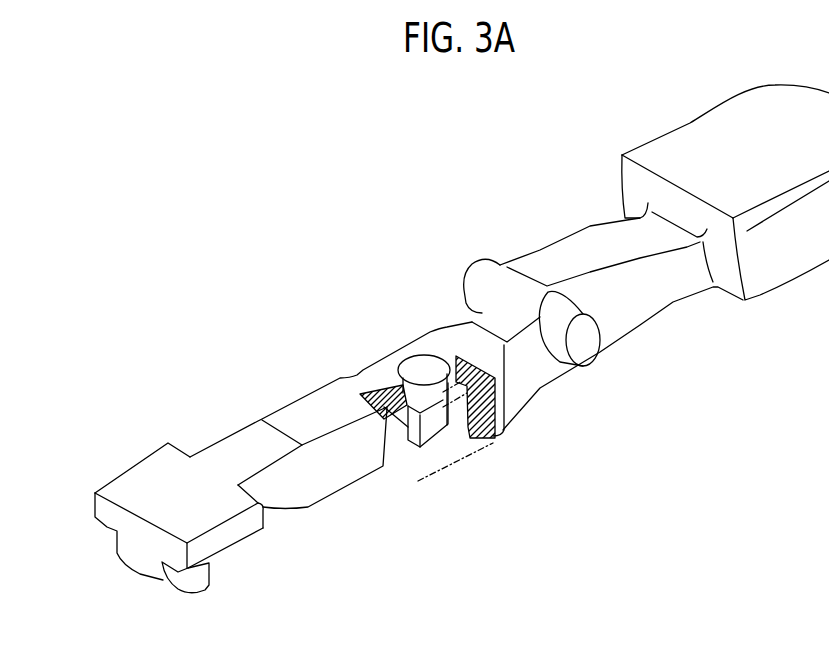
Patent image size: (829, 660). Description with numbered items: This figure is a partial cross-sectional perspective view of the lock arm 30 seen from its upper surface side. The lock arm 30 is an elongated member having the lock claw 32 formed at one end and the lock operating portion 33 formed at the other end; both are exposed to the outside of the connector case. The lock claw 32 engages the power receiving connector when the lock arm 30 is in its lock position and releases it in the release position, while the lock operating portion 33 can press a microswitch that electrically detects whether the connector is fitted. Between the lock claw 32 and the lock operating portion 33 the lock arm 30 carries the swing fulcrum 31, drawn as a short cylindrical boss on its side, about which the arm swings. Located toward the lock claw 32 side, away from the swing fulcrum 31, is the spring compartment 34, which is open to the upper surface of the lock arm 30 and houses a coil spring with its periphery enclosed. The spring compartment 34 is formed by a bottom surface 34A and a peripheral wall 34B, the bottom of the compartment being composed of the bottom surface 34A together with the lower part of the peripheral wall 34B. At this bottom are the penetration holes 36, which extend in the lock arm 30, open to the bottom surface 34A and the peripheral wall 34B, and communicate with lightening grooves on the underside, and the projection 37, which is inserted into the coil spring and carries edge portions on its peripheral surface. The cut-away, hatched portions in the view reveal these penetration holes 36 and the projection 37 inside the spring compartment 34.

The lock arm 30 is at (273, 244).
The swing fulcrum 31 is at (587, 347).
The lock claw 32 is at (190, 582).
The lock operating portion 33 is at (690, 132).
The spring compartment 34 is at (438, 358).
The bottom surface 34A is at (384, 446).
The peripheral wall 34B is at (415, 368).
The penetration holes 36 is at (403, 458).
The projection 37 is at (439, 390).